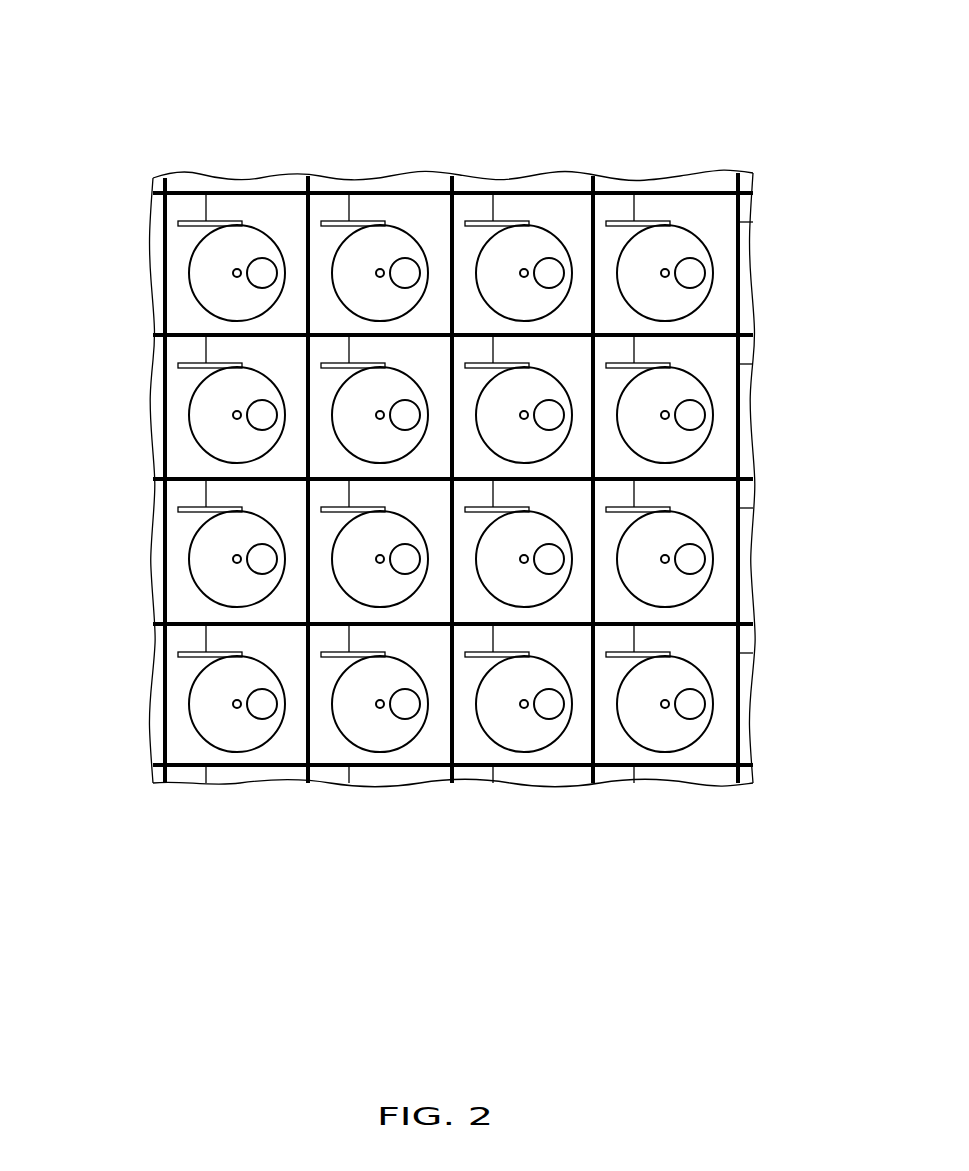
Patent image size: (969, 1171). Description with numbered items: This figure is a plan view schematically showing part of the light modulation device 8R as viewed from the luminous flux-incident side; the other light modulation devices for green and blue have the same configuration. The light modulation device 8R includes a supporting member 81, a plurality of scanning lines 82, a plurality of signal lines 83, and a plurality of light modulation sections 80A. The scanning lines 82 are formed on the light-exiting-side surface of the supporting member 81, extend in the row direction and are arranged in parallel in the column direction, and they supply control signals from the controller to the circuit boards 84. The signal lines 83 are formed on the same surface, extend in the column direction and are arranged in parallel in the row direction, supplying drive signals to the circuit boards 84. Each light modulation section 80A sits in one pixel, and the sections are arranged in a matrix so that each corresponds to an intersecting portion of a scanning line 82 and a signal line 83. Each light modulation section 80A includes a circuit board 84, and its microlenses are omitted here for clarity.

The light modulation device 8R is at (118, 88).
The supporting member 81 is at (193, 182).
The scanning line 82 is at (232, 187).
The signal line 83 is at (305, 222).
The circuit board 84 is at (330, 352).
The light modulation section 80A is at (394, 204).